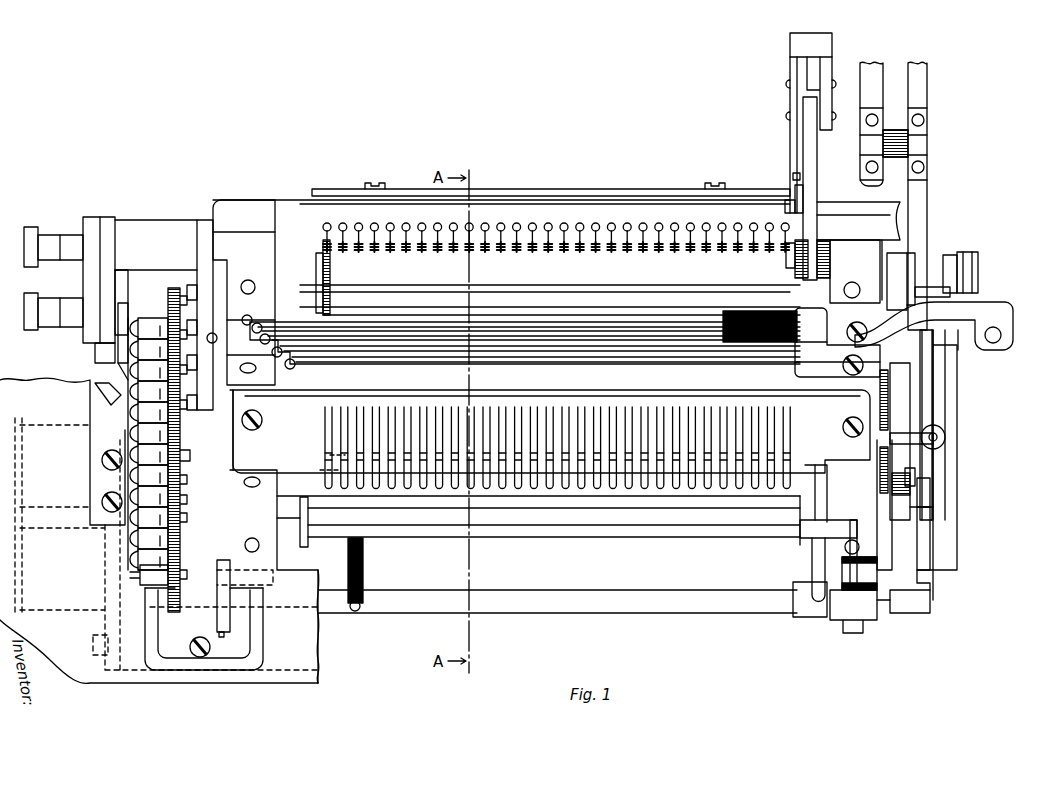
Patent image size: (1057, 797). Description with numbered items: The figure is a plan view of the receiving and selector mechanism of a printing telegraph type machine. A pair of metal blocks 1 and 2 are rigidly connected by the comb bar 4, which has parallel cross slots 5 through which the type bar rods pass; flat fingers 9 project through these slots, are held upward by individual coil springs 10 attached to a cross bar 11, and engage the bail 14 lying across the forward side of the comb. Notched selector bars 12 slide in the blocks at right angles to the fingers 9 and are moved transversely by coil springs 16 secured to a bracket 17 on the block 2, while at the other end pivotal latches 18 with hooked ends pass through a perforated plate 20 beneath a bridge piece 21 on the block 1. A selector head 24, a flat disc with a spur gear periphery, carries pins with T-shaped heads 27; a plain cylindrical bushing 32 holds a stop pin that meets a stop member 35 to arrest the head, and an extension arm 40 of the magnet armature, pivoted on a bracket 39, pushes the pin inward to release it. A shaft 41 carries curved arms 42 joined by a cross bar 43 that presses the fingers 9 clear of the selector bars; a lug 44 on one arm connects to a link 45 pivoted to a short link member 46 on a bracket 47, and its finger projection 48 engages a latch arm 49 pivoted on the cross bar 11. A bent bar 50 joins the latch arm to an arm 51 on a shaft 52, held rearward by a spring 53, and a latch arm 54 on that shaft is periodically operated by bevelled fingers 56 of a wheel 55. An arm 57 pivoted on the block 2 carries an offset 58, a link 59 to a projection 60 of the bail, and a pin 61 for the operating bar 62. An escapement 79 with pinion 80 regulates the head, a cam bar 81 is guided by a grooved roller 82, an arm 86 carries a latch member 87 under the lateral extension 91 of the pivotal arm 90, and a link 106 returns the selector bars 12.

The metal block 1 is at (272, 553).
The metal block 2 is at (815, 575).
The comb bar 4 is at (325, 427).
The cross slots 5 is at (335, 426).
The flat fingers 9 is at (350, 418).
The coil springs 10 is at (415, 246).
The cross bar 11 is at (288, 206).
The selector bars 12 is at (545, 362).
The bail 14 is at (680, 530).
The coil springs 16 is at (730, 312).
The bracket 17 is at (795, 325).
The pivotal latches 18 is at (278, 350).
The perforated plate 20 is at (193, 288).
The bridge piece 21 is at (208, 262).
The selector head 24 is at (167, 562).
The T-shaped heads 27 is at (133, 325).
The plain cylindrical bushing 32 is at (183, 532).
The stop member 35 is at (120, 375).
The bracket 39 is at (95, 385).
The extension arm 40 is at (123, 327).
The shaft 41 is at (647, 292).
The curved arms 42 is at (323, 265).
The cross bar 43 is at (487, 311).
The lug 44 is at (824, 255).
The link 45 is at (812, 155).
The short link member 46 is at (790, 138).
The bracket 47 is at (790, 47).
The finger projection 48 is at (793, 175).
The latch arm 49 is at (803, 192).
The bent bar 50 is at (790, 215).
The arm 51 is at (800, 583).
The shaft 52 is at (723, 605).
The spring 53 is at (365, 572).
The latch arm 54 is at (925, 600).
The wheel 55 is at (957, 482).
The bevelled fingers 56 is at (927, 490).
The arm 57 is at (892, 565).
The offset 58 is at (877, 600).
The link 59 is at (852, 590).
The projection 60 is at (820, 531).
The pin 61 is at (913, 472).
The operating bar 62 is at (900, 402).
The escapement 79 is at (218, 578).
The pinion 80 is at (175, 612).
The cam bar 81 is at (905, 262).
The grooved roller 82 is at (897, 275).
The arm 86 is at (978, 275).
The latch member 87 is at (957, 255).
The pivotal arm 90 is at (927, 195).
The lateral extension 91 is at (935, 298).
The link 106 is at (1010, 337).